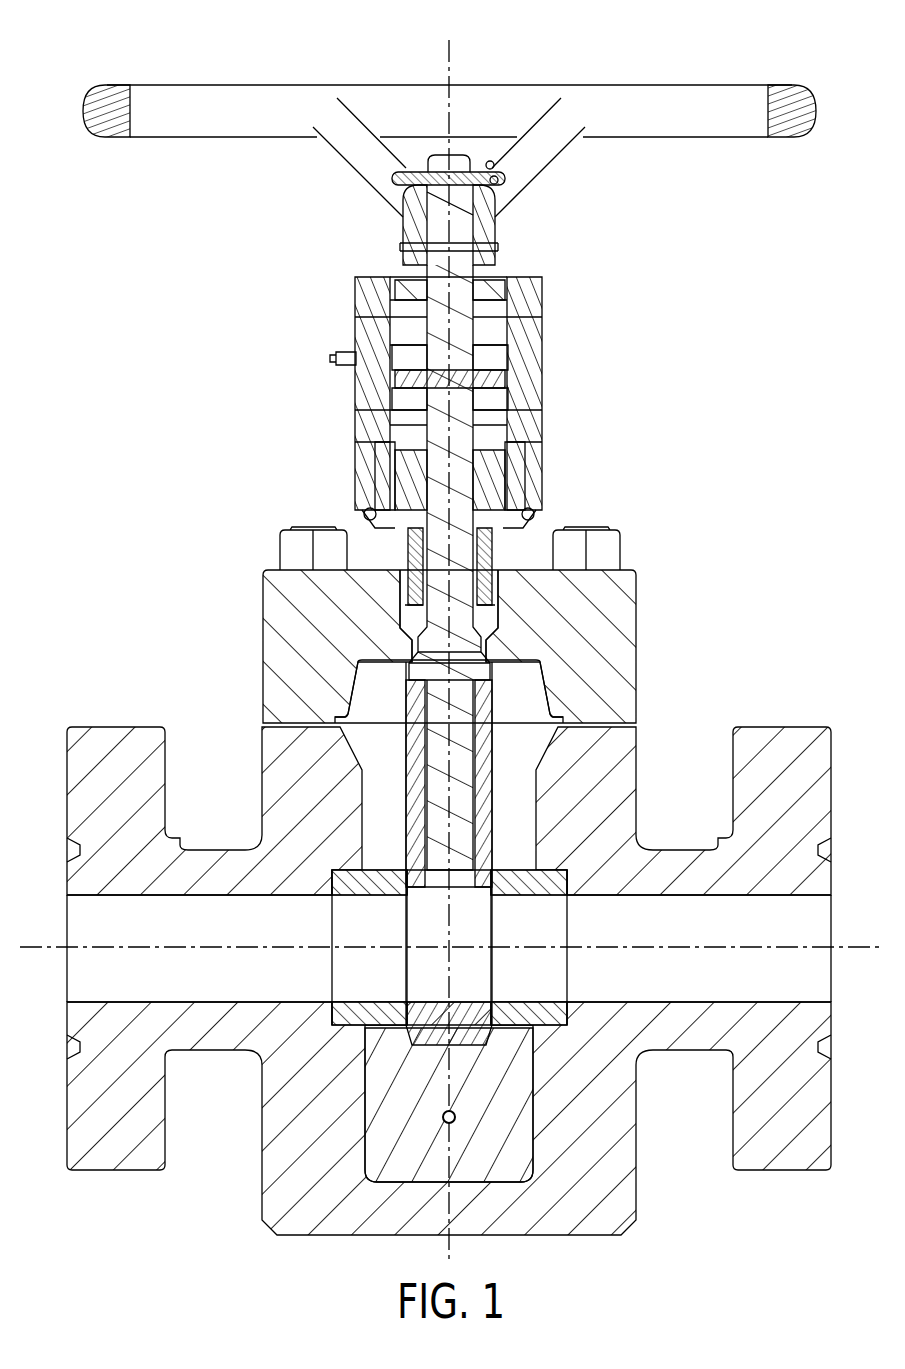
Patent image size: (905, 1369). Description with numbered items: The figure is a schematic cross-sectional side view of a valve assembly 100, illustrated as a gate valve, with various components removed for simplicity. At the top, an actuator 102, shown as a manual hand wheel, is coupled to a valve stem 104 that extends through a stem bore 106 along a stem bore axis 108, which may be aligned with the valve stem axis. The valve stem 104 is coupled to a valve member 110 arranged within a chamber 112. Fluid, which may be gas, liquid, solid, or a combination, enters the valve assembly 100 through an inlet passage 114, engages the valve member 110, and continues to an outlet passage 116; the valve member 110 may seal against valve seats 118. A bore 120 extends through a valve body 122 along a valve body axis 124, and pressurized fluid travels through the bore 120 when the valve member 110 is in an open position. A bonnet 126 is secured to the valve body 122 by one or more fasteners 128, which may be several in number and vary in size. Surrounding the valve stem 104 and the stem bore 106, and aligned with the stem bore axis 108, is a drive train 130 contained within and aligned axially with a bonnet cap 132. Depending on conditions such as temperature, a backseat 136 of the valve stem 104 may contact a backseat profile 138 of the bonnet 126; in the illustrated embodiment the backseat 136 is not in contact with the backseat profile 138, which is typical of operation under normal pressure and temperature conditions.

The valve assembly 100 is at (748, 35).
The actuator 102 is at (203, 137).
The valve stem 104 is at (472, 665).
The stem bore 106 is at (437, 539).
The stem bore axis 108 is at (450, 110).
The valve member 110 is at (405, 1052).
The chamber 112 is at (510, 1168).
The inlet passage 114 is at (92, 970).
The outlet passage 116 is at (808, 975).
The valve seats 118 is at (495, 1032).
The bore 120 is at (110, 895).
The valve body 122 is at (620, 777).
The valve body axis 124 is at (750, 945).
The bonnet 126 is at (632, 585).
The fasteners 128 is at (608, 540).
The drive train 130 is at (510, 376).
The bonnet cap 132 is at (372, 280).
The backseat 136 is at (478, 642).
The backseat profile 138 is at (400, 623).